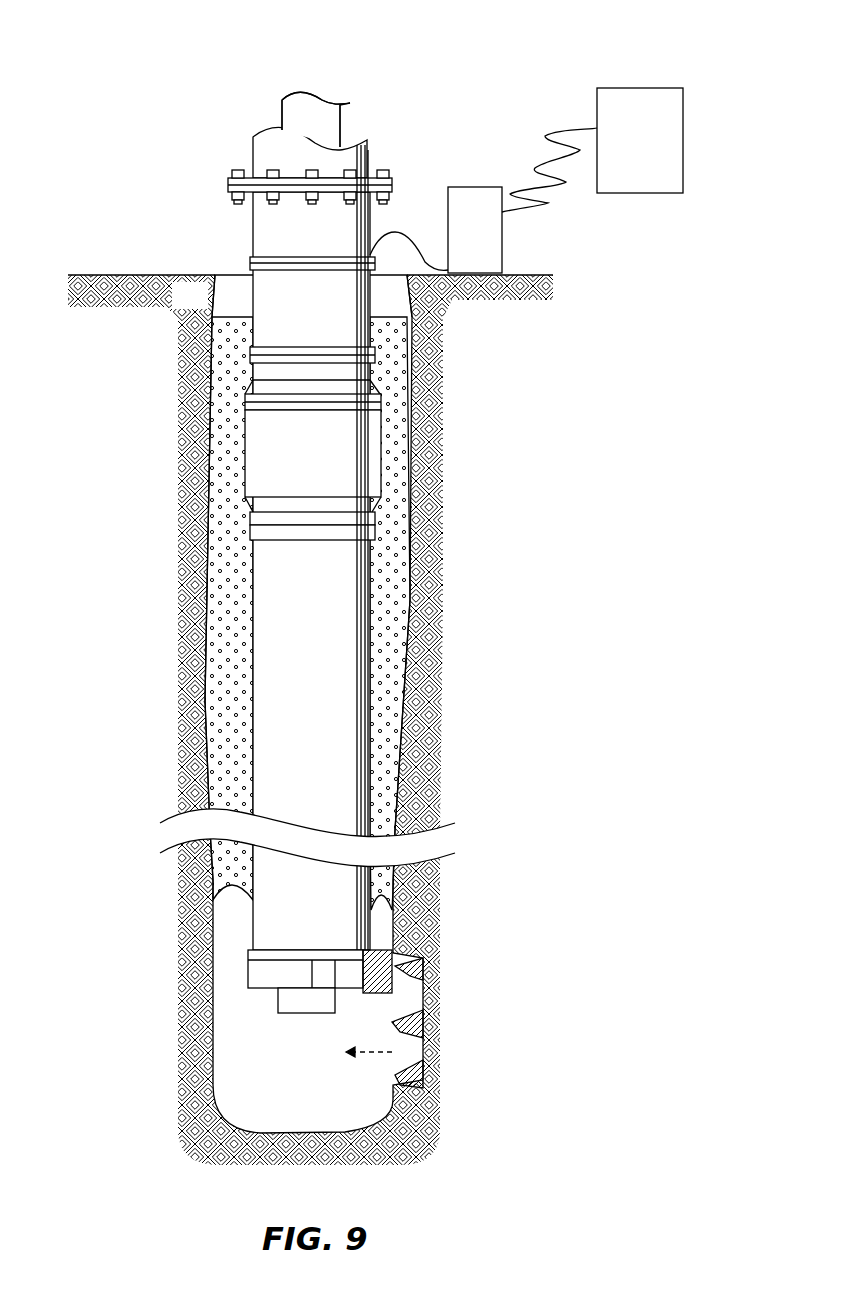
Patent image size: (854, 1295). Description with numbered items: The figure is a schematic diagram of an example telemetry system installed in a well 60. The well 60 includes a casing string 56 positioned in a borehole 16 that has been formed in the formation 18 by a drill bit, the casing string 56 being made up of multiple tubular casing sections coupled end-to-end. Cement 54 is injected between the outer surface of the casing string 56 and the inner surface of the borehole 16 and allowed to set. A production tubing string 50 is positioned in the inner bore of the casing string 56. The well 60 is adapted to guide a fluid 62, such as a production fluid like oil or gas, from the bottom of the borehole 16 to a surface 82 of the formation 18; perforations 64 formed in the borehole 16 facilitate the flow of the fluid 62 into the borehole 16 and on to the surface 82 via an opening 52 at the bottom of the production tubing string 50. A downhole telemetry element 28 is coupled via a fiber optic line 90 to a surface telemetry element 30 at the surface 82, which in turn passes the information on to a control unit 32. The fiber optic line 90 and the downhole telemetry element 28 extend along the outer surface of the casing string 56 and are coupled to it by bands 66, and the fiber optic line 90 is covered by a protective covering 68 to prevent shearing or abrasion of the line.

The borehole 16 is at (238, 280).
The formation 18 is at (206, 309).
The downhole telemetry element 28 is at (378, 965).
The surface telemetry element 30 is at (502, 243).
The control unit 32 is at (656, 157).
The production tubing string 50 is at (340, 127).
The opening 52 is at (298, 1030).
The cement 54 is at (388, 668).
The casing string 56 is at (253, 236).
The well 60 is at (566, 35).
The fluid 62 is at (370, 1056).
The perforations 64 is at (433, 962).
The band 66 is at (285, 257).
The protective covering 68 is at (383, 433).
The surface 82 is at (138, 268).
The fiber optic line 90 is at (403, 233).